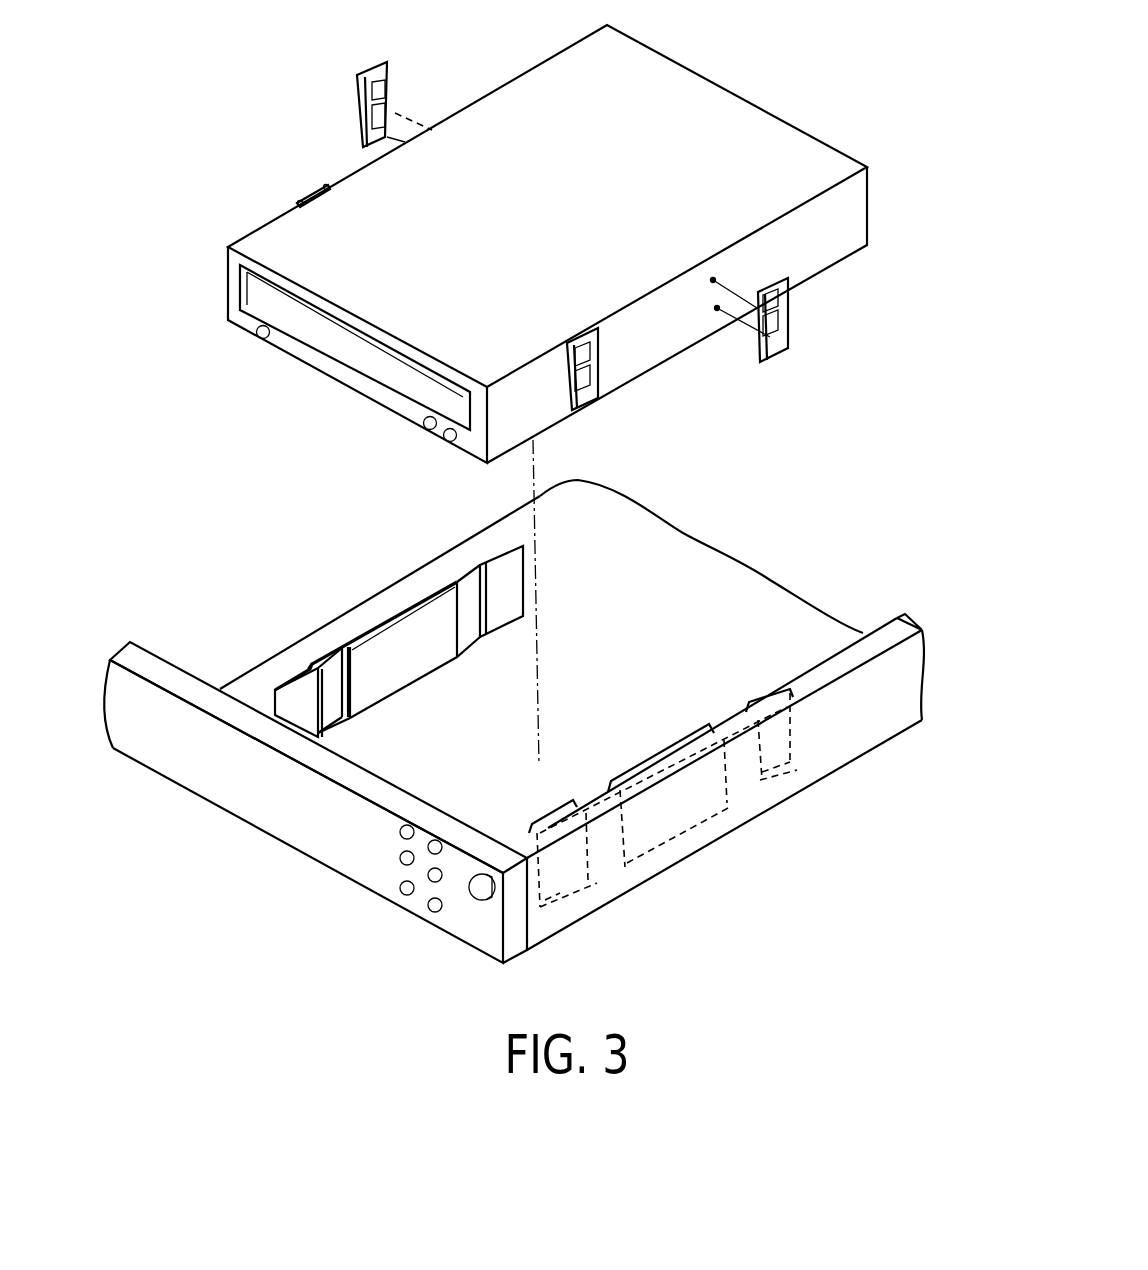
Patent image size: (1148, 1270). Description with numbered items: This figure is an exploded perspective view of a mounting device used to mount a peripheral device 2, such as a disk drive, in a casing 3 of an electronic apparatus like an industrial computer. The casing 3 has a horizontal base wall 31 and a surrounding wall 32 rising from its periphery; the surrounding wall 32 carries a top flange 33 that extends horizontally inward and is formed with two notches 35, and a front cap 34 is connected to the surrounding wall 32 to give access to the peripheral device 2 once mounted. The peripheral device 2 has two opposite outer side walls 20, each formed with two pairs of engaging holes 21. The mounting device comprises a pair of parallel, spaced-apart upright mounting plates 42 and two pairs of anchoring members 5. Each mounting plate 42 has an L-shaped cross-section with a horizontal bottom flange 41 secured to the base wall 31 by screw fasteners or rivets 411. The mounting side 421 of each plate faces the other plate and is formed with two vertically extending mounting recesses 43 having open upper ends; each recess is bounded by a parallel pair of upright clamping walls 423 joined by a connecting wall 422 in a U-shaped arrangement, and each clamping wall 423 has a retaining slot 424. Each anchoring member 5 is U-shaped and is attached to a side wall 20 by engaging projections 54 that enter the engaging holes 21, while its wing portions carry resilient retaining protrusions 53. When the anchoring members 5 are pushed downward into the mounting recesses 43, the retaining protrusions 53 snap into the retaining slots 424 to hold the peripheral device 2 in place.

The peripheral device 2 is at (753, 130).
The outer side wall 20 is at (853, 217).
The engaging holes 21 is at (713, 280).
The anchoring member 5 is at (388, 62).
The resilient retaining protrusion 53 is at (358, 93).
The engaging projections 54 is at (380, 88).
The casing 3 is at (820, 584).
The base wall 31 is at (695, 610).
The surrounding wall 32 is at (848, 730).
The top flange 33 is at (895, 633).
The front cap 34 is at (285, 830).
The notches 35 is at (597, 792).
The bottom flange 41 is at (697, 773).
The screw fasteners or rivets 411 is at (790, 763).
The mounting plate 42 is at (400, 618).
The mounting side 421 is at (387, 647).
The connecting wall 422 is at (337, 657).
The clamping walls 423 is at (345, 648).
The retaining slot 424 is at (312, 662).
The mounting recesses 43 is at (452, 585).